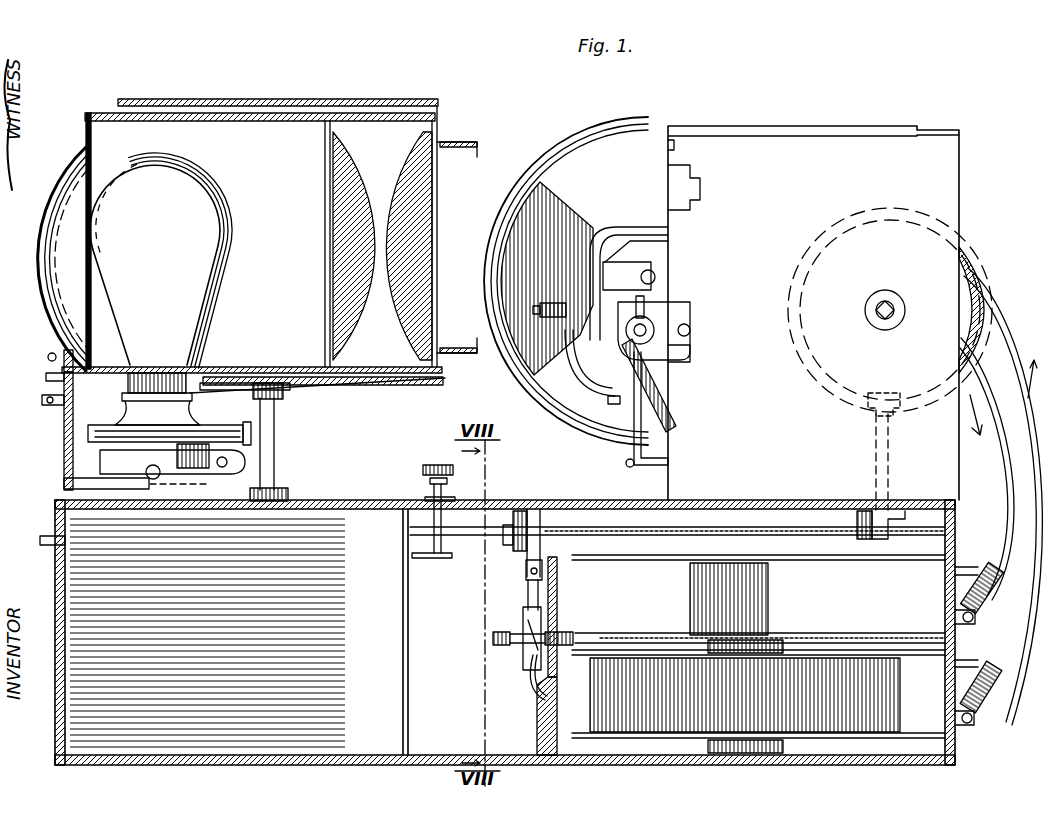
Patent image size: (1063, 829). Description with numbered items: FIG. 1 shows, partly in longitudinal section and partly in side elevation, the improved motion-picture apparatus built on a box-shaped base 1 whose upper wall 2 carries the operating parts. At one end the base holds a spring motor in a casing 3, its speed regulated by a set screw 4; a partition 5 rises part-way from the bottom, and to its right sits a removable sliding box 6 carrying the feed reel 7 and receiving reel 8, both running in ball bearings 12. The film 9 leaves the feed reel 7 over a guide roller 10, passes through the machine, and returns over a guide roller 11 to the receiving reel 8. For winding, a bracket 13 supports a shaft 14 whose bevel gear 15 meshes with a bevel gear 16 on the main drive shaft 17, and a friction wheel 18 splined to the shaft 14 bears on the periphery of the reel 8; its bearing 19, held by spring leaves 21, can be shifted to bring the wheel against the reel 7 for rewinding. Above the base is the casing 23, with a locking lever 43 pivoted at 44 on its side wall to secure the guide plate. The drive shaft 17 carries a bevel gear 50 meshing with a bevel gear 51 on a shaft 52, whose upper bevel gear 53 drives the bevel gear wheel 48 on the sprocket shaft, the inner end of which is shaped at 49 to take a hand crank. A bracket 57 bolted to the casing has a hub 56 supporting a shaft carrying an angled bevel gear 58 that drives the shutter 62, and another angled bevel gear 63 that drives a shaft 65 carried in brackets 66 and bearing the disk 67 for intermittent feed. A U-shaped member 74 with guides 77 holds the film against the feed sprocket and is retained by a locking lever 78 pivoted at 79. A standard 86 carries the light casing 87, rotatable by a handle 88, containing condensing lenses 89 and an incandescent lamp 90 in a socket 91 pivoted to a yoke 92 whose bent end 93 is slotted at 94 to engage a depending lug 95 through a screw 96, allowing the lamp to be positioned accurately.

The base 1 is at (318, 508).
The upper wall 2 is at (545, 509).
The casing 3 is at (214, 633).
The set screw 4 is at (423, 469).
The partition 5 is at (537, 718).
The sliding box 6 is at (557, 592).
The feed reel 7 is at (583, 728).
The receiving reel 8 is at (629, 640).
The film 9 is at (1035, 705).
The guide roller 10 is at (985, 668).
The guide roller 11 is at (978, 570).
The ball bearings 12 is at (716, 653).
The bracket 13 is at (526, 571).
The shaft 14 is at (528, 597).
The bevel gear 15 is at (520, 554).
The bevel gear 16 is at (518, 511).
The main drive shaft 17 is at (596, 525).
The friction wheel 18 is at (494, 634).
The bearing 19 is at (535, 631).
The spring leaves 21 is at (526, 655).
The casing 23 is at (830, 313).
The locking lever 43 is at (668, 182).
The pivot 44 is at (668, 143).
The bevel gear wheel 48 is at (978, 272).
The shaped shaft end 49 is at (880, 314).
The bevel gear 50 is at (875, 539).
The bevel gear 51 is at (900, 523).
The shaft 52 is at (890, 468).
The bevel gear 53 is at (888, 393).
The hub 56 is at (560, 325).
The bracket 57 is at (599, 228).
The angled bevel gear 58 is at (668, 300).
The shutter 62 is at (528, 208).
The angled bevel gear 63 is at (630, 290).
The shaft 65 is at (640, 330).
The brackets 66 is at (650, 338).
The disk 67 is at (582, 355).
The U-shaped member 74 is at (660, 405).
The guides 77 is at (672, 350).
The locking lever 78 is at (625, 400).
The pivot 79 is at (646, 446).
The standard 86 is at (275, 452).
The light casing 87 is at (266, 370).
The handle 88 is at (88, 433).
The condensing lenses 89 is at (410, 172).
The incandescent lamp 90 is at (205, 272).
The socket 91 is at (172, 474).
The yoke 92 is at (75, 487).
The upwardly bent end 93 is at (64, 460).
The slot 94 is at (42, 402).
The depending lug 95 is at (62, 365).
The screw 96 is at (46, 380).